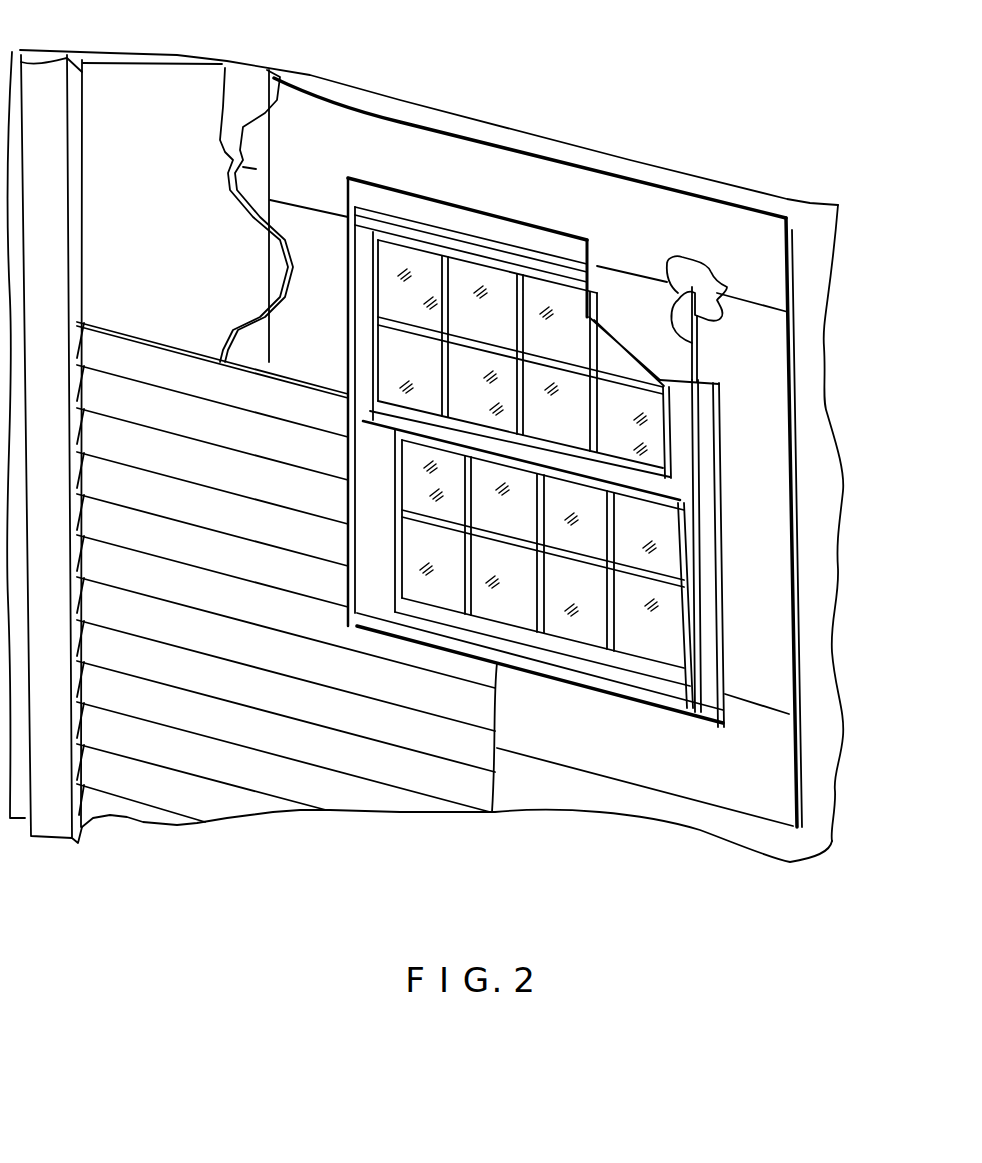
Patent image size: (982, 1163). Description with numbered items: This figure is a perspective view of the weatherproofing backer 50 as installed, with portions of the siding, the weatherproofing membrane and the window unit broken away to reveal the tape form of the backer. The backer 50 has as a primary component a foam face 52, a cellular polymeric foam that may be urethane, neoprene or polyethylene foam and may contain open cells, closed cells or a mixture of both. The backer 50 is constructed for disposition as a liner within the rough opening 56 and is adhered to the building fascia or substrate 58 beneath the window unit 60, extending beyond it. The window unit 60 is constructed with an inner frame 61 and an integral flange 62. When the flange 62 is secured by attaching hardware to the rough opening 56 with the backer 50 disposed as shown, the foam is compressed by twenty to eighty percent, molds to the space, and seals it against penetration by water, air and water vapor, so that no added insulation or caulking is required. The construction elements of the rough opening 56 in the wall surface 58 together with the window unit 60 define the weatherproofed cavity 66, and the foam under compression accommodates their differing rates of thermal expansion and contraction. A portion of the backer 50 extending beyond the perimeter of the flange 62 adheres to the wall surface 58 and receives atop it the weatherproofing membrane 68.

The weatherproofing backer 50 is at (536, 376).
The foam face 52 is at (588, 743).
The rough opening 56 is at (697, 343).
The building fascia or substrate 58 is at (226, 62).
The window unit 60 is at (353, 262).
The inner frame 61 is at (588, 267).
The integral flange 62 is at (468, 220).
The weatherproofed cavity 66 is at (649, 323).
The weatherproofing membrane 68 is at (186, 241).